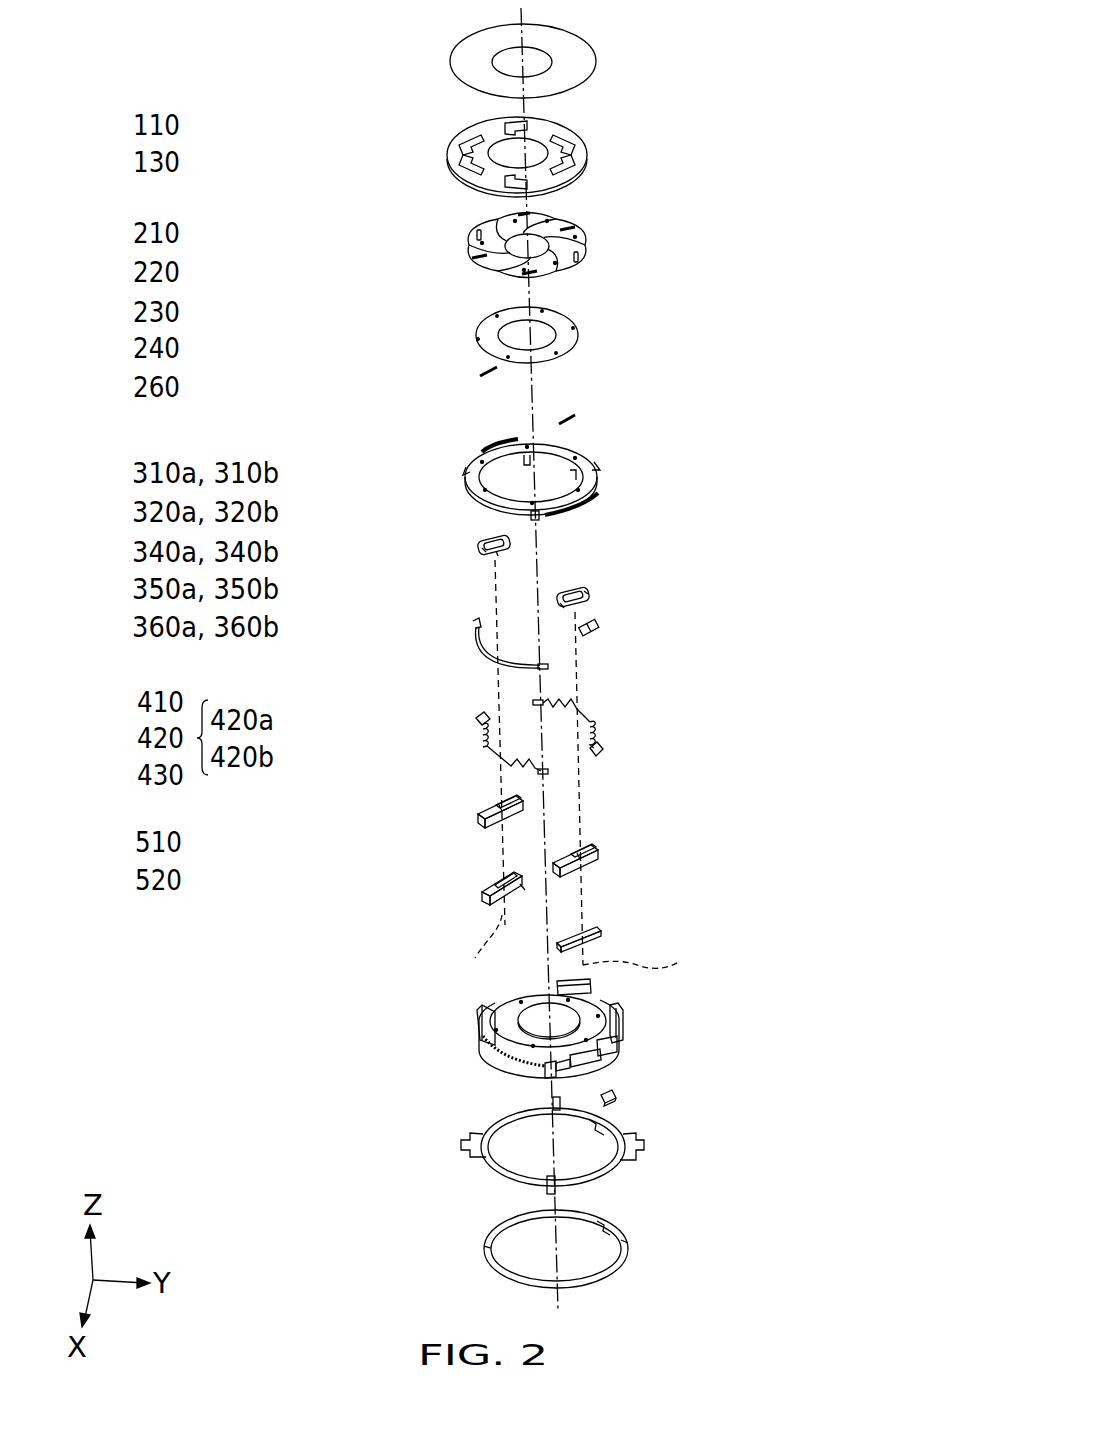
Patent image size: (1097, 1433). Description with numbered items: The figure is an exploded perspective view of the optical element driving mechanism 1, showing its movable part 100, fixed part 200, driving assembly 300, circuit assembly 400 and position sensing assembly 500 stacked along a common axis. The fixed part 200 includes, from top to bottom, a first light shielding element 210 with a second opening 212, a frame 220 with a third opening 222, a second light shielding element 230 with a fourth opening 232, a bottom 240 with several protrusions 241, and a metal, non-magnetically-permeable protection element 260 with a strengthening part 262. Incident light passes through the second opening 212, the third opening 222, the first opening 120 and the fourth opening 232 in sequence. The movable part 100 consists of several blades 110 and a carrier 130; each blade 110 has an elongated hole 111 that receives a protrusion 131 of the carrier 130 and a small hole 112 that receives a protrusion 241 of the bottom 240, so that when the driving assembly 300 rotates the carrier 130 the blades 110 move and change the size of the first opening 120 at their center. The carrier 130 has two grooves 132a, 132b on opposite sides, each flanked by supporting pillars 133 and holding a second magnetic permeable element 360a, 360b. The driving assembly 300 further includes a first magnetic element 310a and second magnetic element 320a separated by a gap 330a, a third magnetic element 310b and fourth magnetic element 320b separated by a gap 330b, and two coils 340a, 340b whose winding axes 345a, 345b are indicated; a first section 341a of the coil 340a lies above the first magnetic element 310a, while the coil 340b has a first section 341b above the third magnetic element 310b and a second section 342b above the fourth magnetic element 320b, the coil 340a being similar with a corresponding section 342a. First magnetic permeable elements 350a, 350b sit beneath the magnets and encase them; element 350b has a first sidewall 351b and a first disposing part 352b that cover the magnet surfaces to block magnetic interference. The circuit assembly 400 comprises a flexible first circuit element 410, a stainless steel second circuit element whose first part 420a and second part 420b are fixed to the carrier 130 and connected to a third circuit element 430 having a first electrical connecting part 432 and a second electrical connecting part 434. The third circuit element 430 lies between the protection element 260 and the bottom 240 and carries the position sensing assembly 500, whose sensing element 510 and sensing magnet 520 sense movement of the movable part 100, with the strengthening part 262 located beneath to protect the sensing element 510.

The optical element driving mechanism 1 is at (156, 25).
The movable part 100 is at (128, 103).
The blades 110 is at (578, 222).
The elongated hole 111 is at (580, 257).
The small hole 112 is at (560, 266).
The first opening 120 is at (540, 244).
The carrier 130 is at (595, 470).
The protrusions 131 is at (500, 483).
The groove 132a is at (596, 500).
The groove 132b is at (490, 453).
The supporting pillars 133 is at (540, 521).
The fixed part 200 is at (128, 213).
The first light shielding element 210 is at (570, 46).
The second opening 212 is at (540, 65).
The frame 220 is at (552, 126).
The third opening 222 is at (535, 152).
The second light shielding element 230 is at (575, 338).
The fourth opening 232 is at (548, 344).
The bottom 240 is at (625, 1038).
The protrusions 241 is at (592, 990).
The protection element 260 is at (627, 1244).
The strengthening part 262 is at (606, 1227).
The driving assembly 300 is at (128, 453).
The first magnetic element 310a is at (572, 866).
The third magnetic element 310b is at (490, 818).
The second magnetic element 320a is at (585, 850).
The fourth magnetic element 320b is at (510, 798).
The gap 330a is at (582, 860).
The gap 330b is at (495, 800).
The coil 340a is at (589, 598).
The coil 340b is at (496, 552).
The first section 341a is at (564, 612).
The first section 341b is at (486, 547).
The coil winding 342a is at (587, 591).
The second section 342b is at (502, 536).
The winding axis 345a is at (666, 960).
The winding axis 345b is at (452, 944).
The first magnetic permeable element 350a is at (598, 937).
The first magnetic permeable element 350b is at (486, 898).
The first sidewall 351b is at (484, 892).
The first disposing part 352b is at (528, 886).
The second magnetic permeable element 360a is at (570, 418).
The second magnetic permeable element 360b is at (486, 370).
The circuit assembly 400 is at (128, 683).
The first circuit element 410 is at (478, 634).
The first part 420a is at (606, 749).
The second part 420b is at (478, 714).
The third circuit element 430 is at (645, 1138).
The first electrical connecting part 432 is at (546, 1188).
The second electrical connecting part 434 is at (568, 1106).
The position sensing assembly 500 is at (128, 820).
The sensing element 510 is at (614, 1094).
The sensing magnet 520 is at (597, 630).